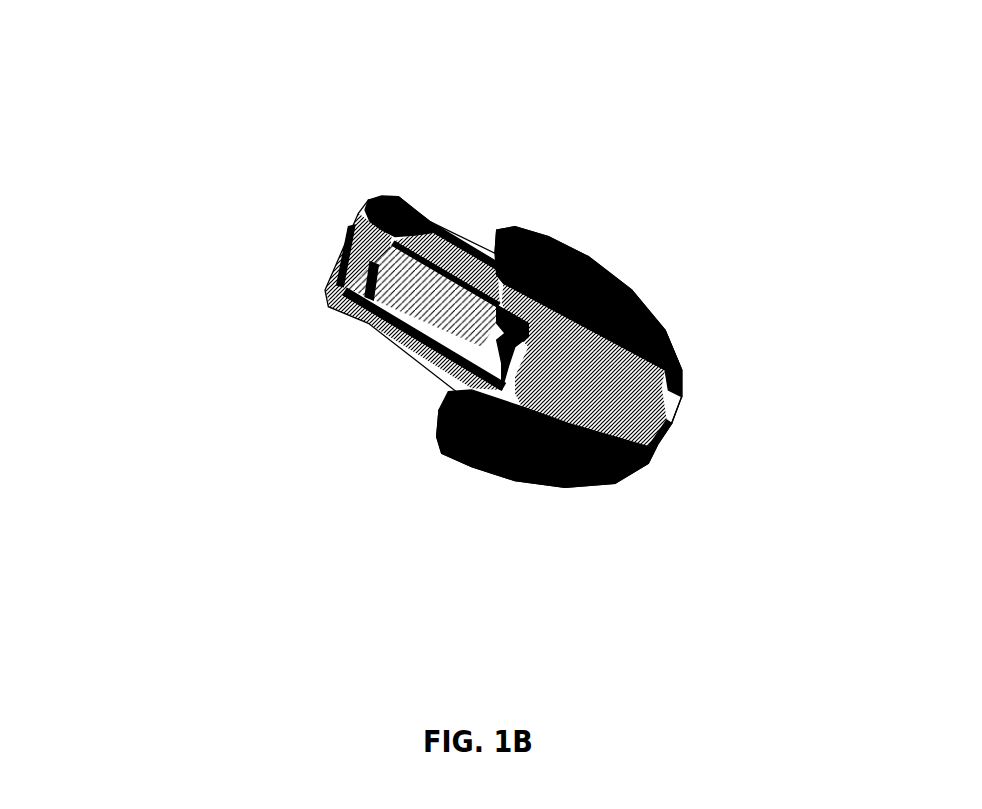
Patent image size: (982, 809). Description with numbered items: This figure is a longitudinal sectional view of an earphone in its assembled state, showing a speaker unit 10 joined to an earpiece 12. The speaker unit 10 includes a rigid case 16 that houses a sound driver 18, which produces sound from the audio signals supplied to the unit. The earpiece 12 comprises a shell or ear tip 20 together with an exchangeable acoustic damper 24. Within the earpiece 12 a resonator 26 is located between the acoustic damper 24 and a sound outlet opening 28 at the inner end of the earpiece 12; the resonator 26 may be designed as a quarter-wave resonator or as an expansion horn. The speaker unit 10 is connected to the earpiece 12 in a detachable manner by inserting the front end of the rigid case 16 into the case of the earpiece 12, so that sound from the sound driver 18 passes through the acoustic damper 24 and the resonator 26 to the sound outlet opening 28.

The speaker unit 10 is at (303, 320).
The earpiece 12 is at (687, 327).
The rigid case 16 is at (335, 223).
The sound driver 18 is at (403, 327).
The shell or ear tip 20 is at (595, 260).
The exchangeable acoustic damper 24 is at (530, 372).
The resonator 26 is at (627, 420).
The sound outlet opening 28 is at (672, 417).